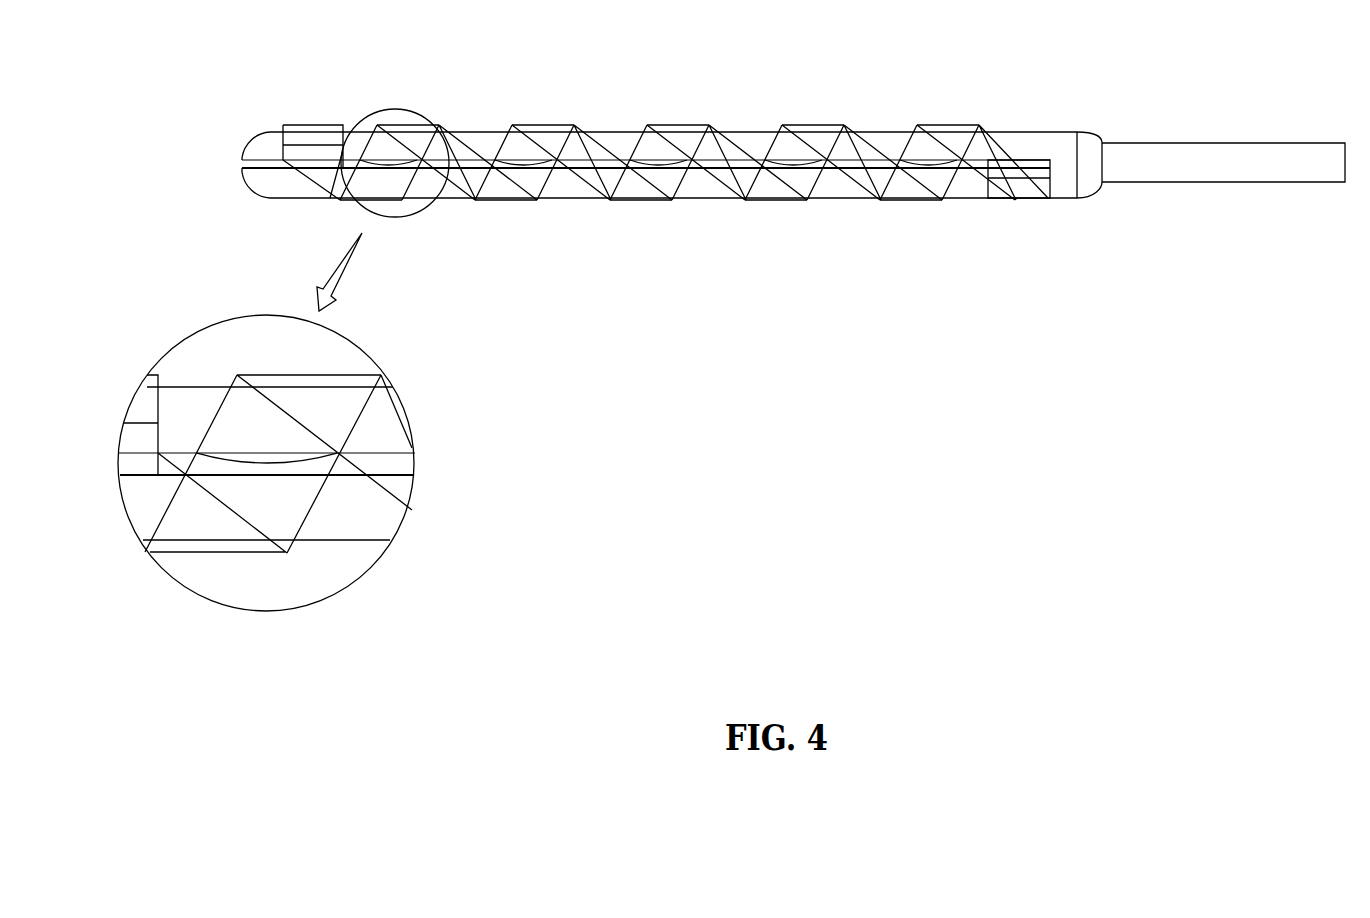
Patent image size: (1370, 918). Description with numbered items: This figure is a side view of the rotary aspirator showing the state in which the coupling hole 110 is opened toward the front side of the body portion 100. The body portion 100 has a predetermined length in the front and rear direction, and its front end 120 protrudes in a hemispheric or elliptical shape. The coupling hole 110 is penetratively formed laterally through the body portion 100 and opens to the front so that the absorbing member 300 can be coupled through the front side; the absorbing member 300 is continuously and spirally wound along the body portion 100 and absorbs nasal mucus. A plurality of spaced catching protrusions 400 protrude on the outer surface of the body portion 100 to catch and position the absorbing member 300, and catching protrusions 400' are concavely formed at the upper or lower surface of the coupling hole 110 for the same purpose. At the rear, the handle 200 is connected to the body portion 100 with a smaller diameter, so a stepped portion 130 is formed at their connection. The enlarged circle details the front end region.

The body portion 100 is at (342, 127).
The coupling hole 110 is at (773, 162).
The front end 120 is at (240, 158).
The stepped portion 130 is at (1087, 183).
The handle 200 is at (1217, 150).
The absorbing member 300 is at (867, 200).
The catching protrusions 400 is at (658, 103).
The catching protrusions 400' is at (298, 555).